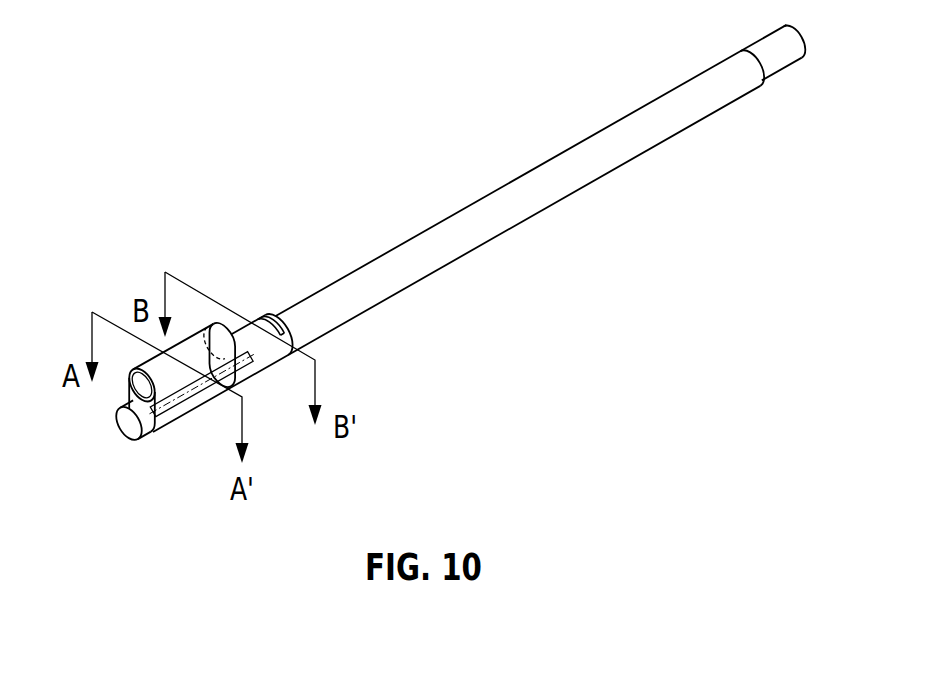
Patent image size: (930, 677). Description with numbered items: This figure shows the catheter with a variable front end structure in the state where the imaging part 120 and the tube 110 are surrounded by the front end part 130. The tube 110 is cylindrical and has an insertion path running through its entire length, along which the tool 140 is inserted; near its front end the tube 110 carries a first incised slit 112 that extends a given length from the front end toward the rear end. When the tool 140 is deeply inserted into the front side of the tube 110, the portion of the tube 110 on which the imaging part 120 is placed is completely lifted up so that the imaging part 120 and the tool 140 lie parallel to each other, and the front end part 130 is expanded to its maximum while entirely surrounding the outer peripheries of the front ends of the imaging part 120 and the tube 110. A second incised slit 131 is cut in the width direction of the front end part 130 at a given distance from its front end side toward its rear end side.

The tube 110 is at (408, 270).
The first incised slit 112 is at (188, 388).
The imaging part 120 is at (124, 392).
The front end part 130 is at (277, 353).
The second incised slit 131 is at (265, 320).
The tool 140 is at (129, 440).